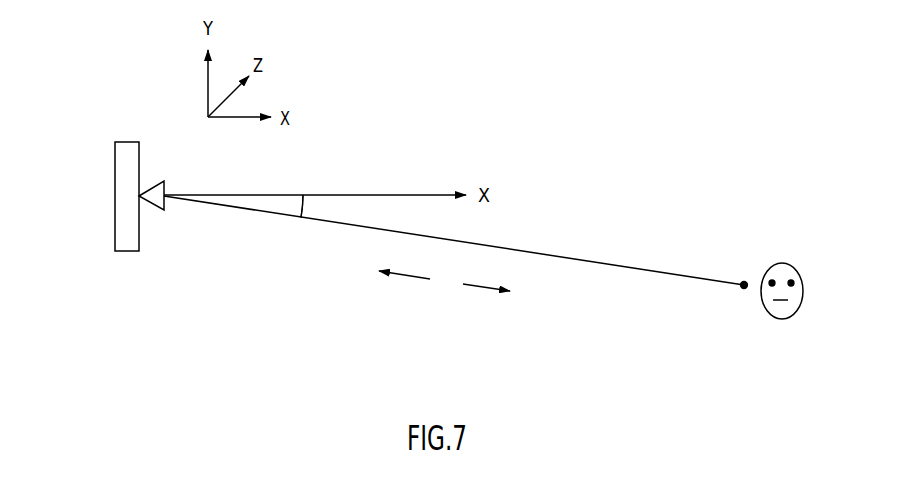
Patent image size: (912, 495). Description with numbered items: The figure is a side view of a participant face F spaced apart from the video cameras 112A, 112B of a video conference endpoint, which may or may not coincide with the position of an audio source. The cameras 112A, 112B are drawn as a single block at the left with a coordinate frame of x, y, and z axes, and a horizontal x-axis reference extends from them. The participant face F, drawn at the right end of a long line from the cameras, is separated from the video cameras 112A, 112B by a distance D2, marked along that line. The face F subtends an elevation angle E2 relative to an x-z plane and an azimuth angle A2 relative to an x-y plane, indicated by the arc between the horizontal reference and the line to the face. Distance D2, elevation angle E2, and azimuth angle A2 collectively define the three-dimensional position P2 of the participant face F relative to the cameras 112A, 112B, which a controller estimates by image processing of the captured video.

The video camera 112A is at (98, 177).
The video camera 112B is at (115, 160).
The azimuth angle A2 is at (304, 205).
The elevation angle E2 is at (302, 206).
The distance D2 is at (452, 241).
The 3-D position P2 is at (752, 318).
The participant face F is at (780, 262).